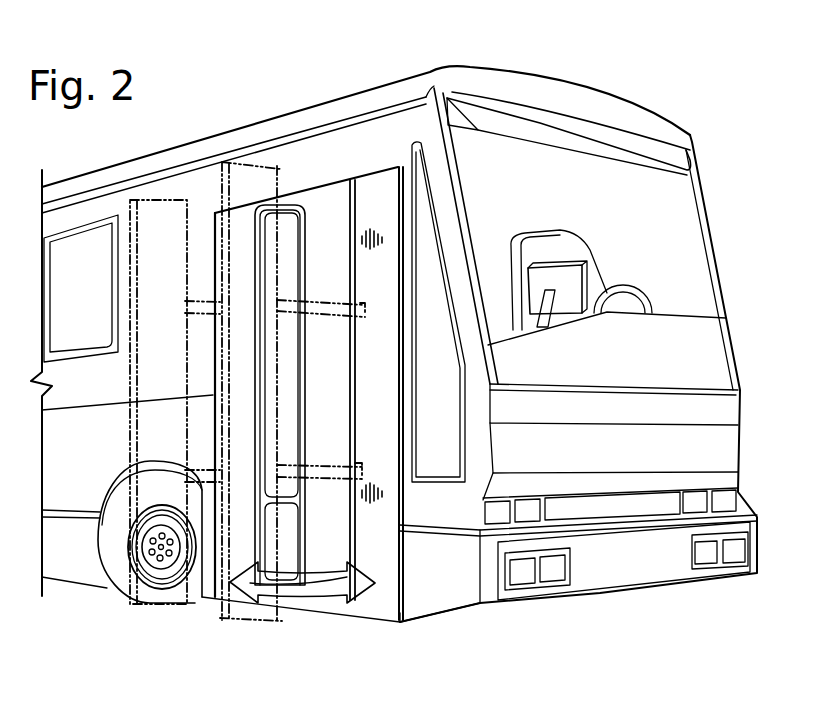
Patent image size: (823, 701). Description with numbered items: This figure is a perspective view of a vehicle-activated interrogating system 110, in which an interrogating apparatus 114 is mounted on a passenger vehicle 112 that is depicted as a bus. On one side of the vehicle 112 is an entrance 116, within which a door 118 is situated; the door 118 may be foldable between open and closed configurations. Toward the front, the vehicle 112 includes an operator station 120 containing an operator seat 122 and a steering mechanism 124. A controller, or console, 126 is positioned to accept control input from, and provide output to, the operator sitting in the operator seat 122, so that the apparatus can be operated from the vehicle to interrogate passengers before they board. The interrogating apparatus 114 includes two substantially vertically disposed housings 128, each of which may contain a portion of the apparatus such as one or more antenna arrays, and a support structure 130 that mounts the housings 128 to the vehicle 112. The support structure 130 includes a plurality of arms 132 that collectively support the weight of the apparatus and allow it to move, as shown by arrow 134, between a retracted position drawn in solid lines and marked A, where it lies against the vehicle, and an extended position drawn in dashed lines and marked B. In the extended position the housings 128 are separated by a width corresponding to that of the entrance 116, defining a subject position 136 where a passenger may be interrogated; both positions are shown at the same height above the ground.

The vehicle-activated interrogating system 110 is at (394, 344).
The passenger vehicle 112 is at (658, 115).
The interrogating apparatus 114 is at (410, 587).
The entrance 116 is at (343, 239).
The door 118 is at (295, 289).
The operator station 120 is at (614, 234).
The operator seat 122 is at (547, 231).
The steering mechanism 124 is at (640, 292).
The controller 126 is at (551, 250).
The housings 128 is at (397, 565).
The support structure 130 is at (323, 330).
The arms 132 is at (324, 315).
The arrow 134 is at (292, 602).
The subject position 136 is at (195, 598).